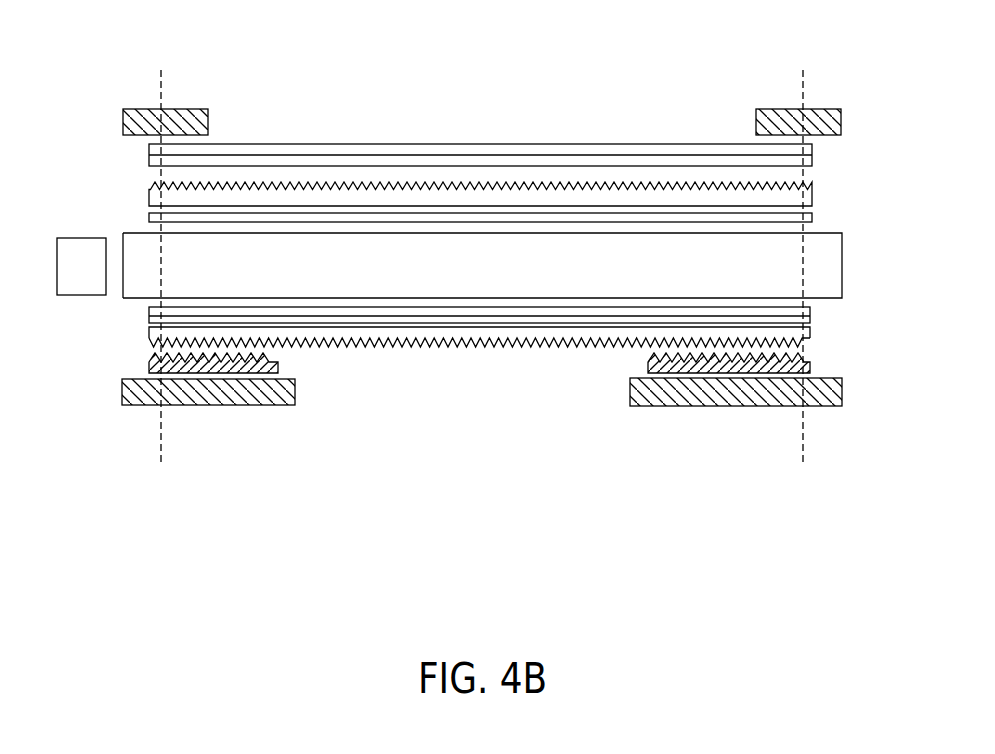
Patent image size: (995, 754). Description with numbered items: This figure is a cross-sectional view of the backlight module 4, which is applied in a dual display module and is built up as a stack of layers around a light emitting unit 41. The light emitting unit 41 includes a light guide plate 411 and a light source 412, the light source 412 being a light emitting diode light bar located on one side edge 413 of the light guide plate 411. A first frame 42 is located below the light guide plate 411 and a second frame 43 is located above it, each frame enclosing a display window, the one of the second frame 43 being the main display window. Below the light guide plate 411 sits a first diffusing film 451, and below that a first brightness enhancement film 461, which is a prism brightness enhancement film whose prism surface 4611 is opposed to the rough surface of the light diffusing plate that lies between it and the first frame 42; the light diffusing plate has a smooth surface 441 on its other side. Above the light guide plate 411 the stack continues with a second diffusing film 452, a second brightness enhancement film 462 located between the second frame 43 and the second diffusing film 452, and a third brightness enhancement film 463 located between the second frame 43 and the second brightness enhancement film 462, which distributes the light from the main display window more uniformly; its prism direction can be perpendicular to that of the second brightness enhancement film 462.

The backlight module 4 is at (758, 33).
The light emitting unit 41 is at (80, 152).
The light guide plate 411 is at (139, 233).
The light source 412 is at (89, 238).
The side edge 413 is at (123, 273).
The first frame 42 is at (808, 407).
The second frame 43 is at (826, 109).
The smooth surface 441 is at (812, 372).
The first diffusing film 451 is at (812, 312).
The second diffusing film 452 is at (812, 216).
The first brightness enhancement film 461 is at (812, 333).
The prism surface 4611 is at (150, 341).
The second brightness enhancement film 462 is at (812, 197).
The third brightness enhancement film 463 is at (812, 160).